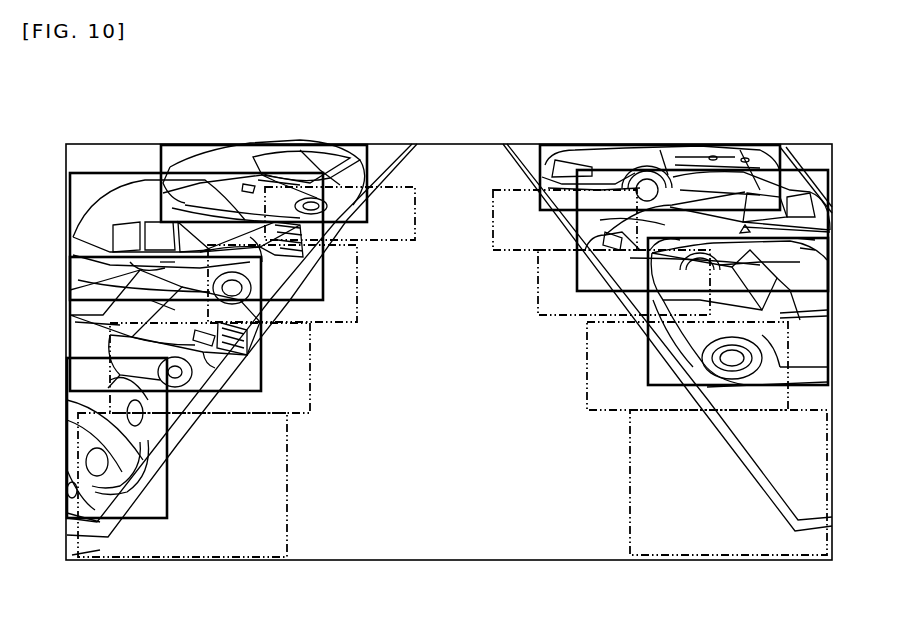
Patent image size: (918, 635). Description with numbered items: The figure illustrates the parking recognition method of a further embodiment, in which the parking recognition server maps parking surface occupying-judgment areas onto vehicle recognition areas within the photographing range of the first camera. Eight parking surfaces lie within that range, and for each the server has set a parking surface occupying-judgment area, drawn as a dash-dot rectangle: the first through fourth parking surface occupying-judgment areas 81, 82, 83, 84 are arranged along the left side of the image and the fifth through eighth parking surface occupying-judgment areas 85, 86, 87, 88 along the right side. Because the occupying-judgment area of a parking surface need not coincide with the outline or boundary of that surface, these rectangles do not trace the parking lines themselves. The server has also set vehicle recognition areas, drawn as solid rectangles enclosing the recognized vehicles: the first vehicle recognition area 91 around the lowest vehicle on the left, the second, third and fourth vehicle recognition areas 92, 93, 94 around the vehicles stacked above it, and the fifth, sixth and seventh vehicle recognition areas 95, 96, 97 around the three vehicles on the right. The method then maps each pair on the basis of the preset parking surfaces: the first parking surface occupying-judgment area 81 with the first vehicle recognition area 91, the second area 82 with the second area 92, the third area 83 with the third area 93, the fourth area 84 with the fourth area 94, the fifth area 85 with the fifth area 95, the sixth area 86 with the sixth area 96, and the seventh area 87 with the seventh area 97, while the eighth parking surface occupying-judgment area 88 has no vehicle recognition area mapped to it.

The first parking surface occupying-judgment area 81 is at (288, 509).
The second parking surface occupying-judgment area 82 is at (311, 372).
The third parking surface occupying-judgment area 83 is at (359, 307).
The fourth parking surface occupying-judgment area 84 is at (398, 242).
The fifth parking surface occupying-judgment area 85 is at (512, 253).
The sixth parking surface occupying-judgment area 86 is at (538, 303).
The seventh parking surface occupying-judgment area 87 is at (587, 372).
The eighth parking surface occupying-judgment area 88 is at (630, 488).
The first vehicle recognition area 91 is at (140, 518).
The second vehicle recognition area 92 is at (70, 345).
The third vehicle recognition area 93 is at (70, 193).
The fourth vehicle recognition area 94 is at (161, 160).
The fifth vehicle recognition area 95 is at (782, 162).
The sixth vehicle recognition area 96 is at (828, 188).
The seventh vehicle recognition area 97 is at (812, 387).